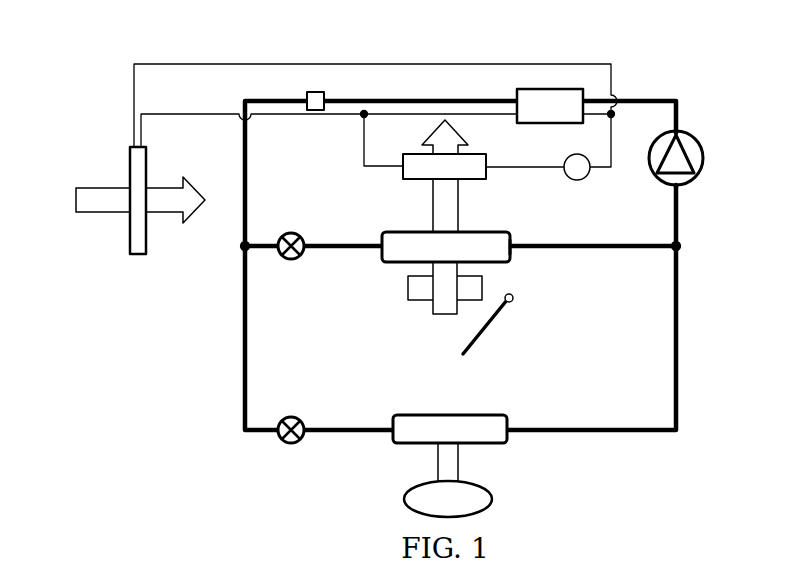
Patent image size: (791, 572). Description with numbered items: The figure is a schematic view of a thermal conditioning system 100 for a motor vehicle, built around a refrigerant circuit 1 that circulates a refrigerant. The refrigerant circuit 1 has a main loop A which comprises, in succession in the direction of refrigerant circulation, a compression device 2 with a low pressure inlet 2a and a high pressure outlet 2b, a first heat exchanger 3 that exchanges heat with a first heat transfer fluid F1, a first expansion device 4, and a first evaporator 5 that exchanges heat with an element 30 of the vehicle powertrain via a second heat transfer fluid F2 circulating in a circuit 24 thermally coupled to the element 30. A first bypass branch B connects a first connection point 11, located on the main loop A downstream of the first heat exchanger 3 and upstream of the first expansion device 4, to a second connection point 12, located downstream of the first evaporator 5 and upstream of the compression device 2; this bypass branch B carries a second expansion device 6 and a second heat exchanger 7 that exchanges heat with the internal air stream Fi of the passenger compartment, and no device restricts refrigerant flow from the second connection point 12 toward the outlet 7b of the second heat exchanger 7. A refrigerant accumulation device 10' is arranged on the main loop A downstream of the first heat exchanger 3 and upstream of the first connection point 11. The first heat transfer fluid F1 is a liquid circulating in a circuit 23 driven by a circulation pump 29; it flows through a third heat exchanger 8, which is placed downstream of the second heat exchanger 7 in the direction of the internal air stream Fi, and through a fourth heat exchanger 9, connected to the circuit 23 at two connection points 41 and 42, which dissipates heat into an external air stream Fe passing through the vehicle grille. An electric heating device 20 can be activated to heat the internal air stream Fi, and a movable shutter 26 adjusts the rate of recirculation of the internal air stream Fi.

The thermal conditioning system 100 is at (378, 50).
The refrigerant circuit 1 is at (690, 319).
The compression device 2 is at (672, 160).
The inlet of the compression device 2a is at (680, 186).
The outlet of the compression device 2b is at (678, 133).
The first heat exchanger 3 is at (540, 103).
The first expansion device 4 is at (293, 418).
The first evaporator 5 is at (468, 425).
The second expansion device 6 is at (293, 233).
The second heat exchanger 7 is at (425, 243).
The outlet of the second heat exchanger 7b is at (518, 250).
The third heat exchanger 8 is at (465, 172).
The fourth heat exchanger 9 is at (138, 240).
The refrigerant accumulation device 10' is at (285, 92).
The first connection point 11 is at (243, 246).
The second connection point 12 is at (680, 246).
The electric heating device 20 is at (408, 288).
The circuit 23 is at (134, 86).
The circuit 24 is at (436, 470).
The movable shutter 26 is at (497, 320).
The circulation pump 29 is at (580, 168).
The element of a powertrain 30 is at (478, 498).
The connection point 41 is at (611, 115).
The connection point 42 is at (366, 115).
The main loop A is at (243, 137).
The first bypass branch B is at (560, 245).
The external air stream Fe is at (115, 198).
The internal air stream Fi is at (445, 211).
The first heat transfer fluid F1 is at (485, 116).
The second heat transfer fluid F2 is at (460, 455).